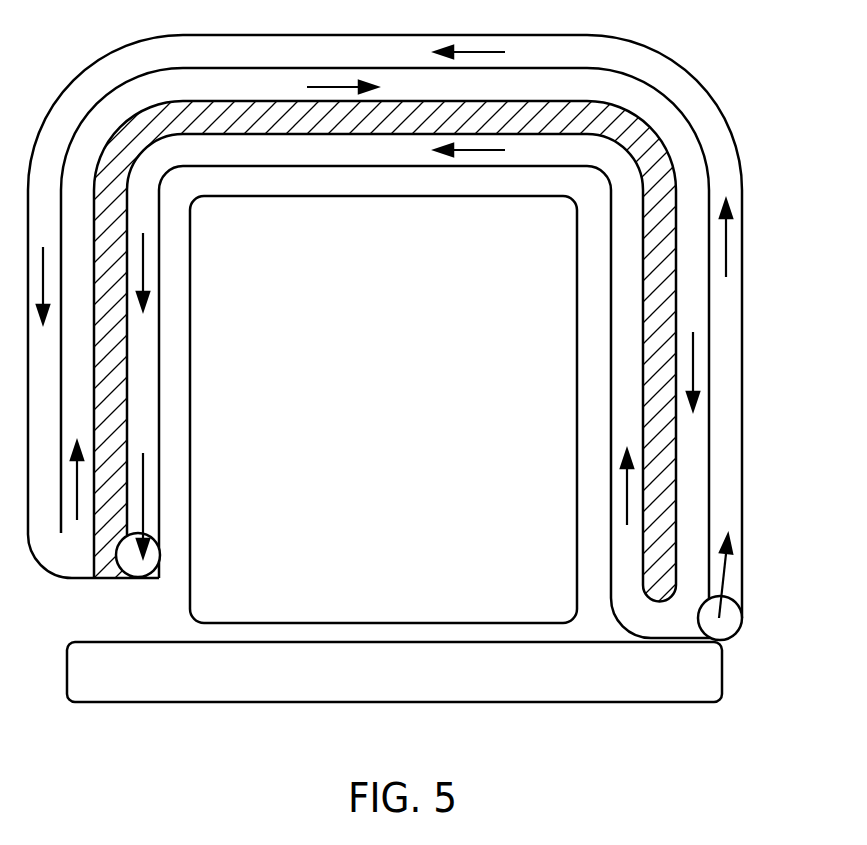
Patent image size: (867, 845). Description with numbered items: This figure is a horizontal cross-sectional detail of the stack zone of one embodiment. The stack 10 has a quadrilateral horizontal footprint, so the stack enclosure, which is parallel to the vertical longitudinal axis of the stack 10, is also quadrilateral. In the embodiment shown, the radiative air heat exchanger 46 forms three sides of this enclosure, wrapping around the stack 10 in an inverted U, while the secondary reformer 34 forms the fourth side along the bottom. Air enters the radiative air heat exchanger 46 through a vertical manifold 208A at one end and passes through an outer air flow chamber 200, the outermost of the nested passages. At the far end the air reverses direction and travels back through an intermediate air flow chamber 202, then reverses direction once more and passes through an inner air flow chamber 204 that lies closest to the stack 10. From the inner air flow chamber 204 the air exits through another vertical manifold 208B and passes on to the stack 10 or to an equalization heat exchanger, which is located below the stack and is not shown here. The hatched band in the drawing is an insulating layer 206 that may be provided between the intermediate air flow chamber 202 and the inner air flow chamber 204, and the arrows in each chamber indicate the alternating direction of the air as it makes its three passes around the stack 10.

The stack 10 is at (397, 419).
The secondary reformer 34 is at (275, 678).
The radiative air heat exchanger 46 is at (728, 345).
The outer air flow chamber 200 is at (308, 52).
The intermediate air flow chamber 202 is at (540, 85).
The inner air flow chamber 204 is at (277, 183).
The insulating layer 206 is at (112, 404).
The vertical manifold 208A is at (735, 620).
The vertical manifold 208B is at (148, 567).